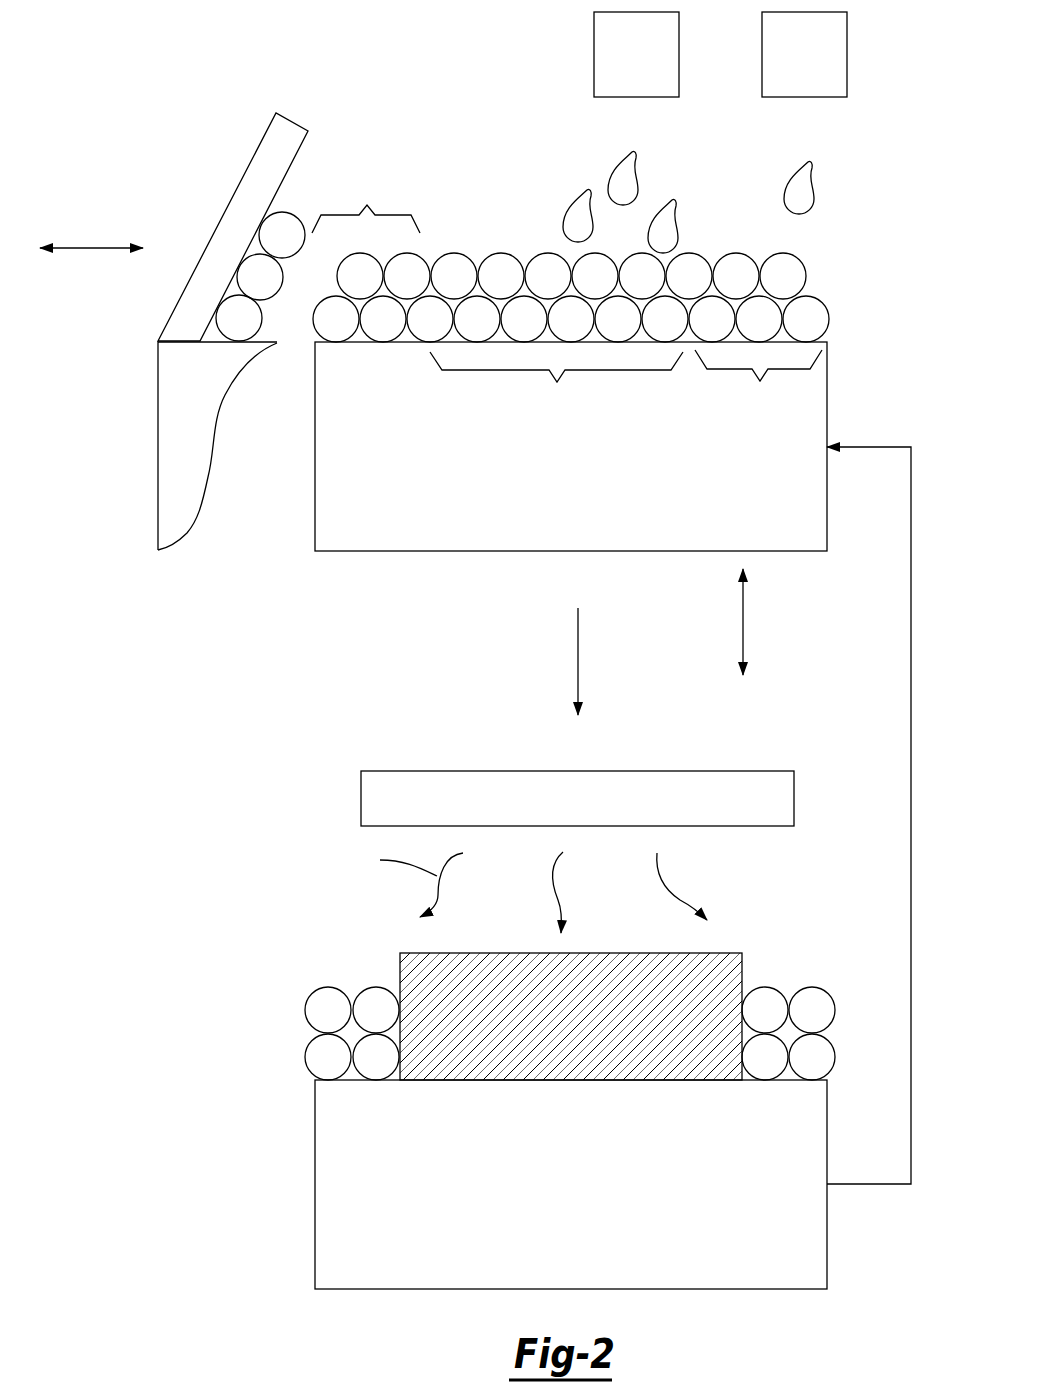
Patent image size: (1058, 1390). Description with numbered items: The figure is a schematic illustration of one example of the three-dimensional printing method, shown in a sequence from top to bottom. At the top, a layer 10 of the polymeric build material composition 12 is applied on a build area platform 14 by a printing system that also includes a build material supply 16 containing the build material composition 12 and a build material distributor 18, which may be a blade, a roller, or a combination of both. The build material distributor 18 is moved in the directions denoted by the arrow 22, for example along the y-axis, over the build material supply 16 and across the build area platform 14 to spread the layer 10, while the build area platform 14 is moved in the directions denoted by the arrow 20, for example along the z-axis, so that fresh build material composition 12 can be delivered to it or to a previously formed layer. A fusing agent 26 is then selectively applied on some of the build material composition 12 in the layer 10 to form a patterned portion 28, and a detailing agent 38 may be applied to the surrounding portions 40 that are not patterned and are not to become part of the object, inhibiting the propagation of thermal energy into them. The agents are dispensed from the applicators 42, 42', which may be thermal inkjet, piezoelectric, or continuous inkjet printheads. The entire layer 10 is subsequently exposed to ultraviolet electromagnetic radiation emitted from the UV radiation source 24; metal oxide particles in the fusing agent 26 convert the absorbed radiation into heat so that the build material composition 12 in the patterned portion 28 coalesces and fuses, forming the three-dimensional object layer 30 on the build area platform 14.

The layer 10 is at (832, 279).
The polymeric build material composition 12 is at (281, 236).
The build area platform 14 is at (328, 487).
The build material supply 16 is at (172, 485).
The build material distributor 18 is at (267, 150).
The arrow 20 is at (740, 622).
The arrow 22 is at (94, 248).
The UV radiation source 24 is at (592, 812).
The fusing agent 26 is at (625, 182).
The patterned portion 28 is at (556, 385).
The 3D object layer 30 is at (744, 948).
The detailing agent 38 is at (800, 193).
The non-patterned portion 40 is at (567, 294).
The applicator 42 is at (636, 54).
The applicator 42' is at (804, 54).